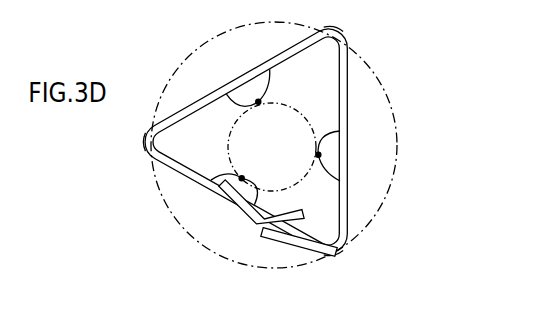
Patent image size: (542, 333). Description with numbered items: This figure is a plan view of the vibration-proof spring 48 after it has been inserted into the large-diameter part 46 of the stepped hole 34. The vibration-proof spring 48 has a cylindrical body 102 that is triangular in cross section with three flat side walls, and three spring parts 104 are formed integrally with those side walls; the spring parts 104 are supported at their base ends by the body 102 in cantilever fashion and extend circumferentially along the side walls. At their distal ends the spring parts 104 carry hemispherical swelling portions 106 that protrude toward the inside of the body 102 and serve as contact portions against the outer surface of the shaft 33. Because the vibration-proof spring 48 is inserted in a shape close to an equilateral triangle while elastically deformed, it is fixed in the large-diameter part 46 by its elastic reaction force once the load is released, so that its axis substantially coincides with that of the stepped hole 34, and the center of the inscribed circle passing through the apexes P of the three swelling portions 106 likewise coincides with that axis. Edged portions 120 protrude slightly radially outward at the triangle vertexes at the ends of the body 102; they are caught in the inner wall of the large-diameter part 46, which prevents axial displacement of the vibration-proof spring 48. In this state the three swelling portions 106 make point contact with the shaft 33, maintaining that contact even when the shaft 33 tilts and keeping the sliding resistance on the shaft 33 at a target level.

The large-diameter part 46 is at (397, 94).
The stepped hole 34 is at (328, 145).
The vibration-proof spring 48 is at (360, 70).
The body 102 is at (283, 57).
The swelling portions 106 is at (250, 98).
The edged portions 120 is at (338, 37).
The spring parts 104 is at (165, 7).
The shaft 33 is at (356, 220).
The apexes P is at (258, 102).